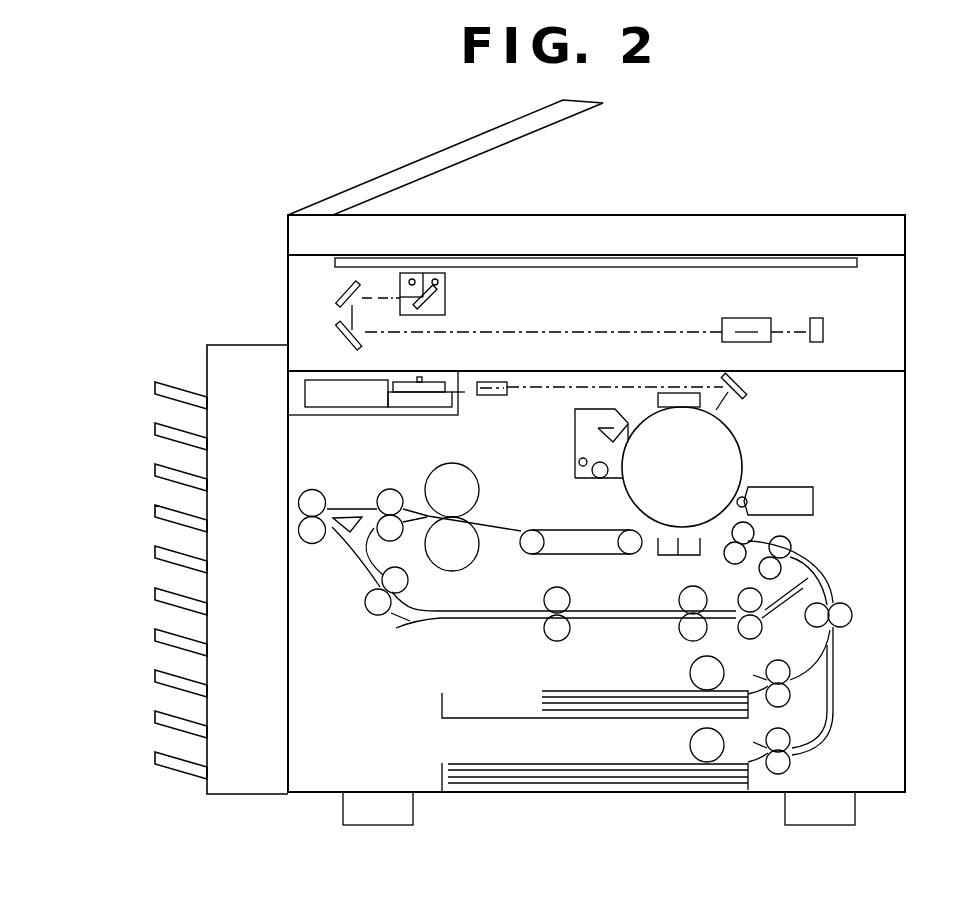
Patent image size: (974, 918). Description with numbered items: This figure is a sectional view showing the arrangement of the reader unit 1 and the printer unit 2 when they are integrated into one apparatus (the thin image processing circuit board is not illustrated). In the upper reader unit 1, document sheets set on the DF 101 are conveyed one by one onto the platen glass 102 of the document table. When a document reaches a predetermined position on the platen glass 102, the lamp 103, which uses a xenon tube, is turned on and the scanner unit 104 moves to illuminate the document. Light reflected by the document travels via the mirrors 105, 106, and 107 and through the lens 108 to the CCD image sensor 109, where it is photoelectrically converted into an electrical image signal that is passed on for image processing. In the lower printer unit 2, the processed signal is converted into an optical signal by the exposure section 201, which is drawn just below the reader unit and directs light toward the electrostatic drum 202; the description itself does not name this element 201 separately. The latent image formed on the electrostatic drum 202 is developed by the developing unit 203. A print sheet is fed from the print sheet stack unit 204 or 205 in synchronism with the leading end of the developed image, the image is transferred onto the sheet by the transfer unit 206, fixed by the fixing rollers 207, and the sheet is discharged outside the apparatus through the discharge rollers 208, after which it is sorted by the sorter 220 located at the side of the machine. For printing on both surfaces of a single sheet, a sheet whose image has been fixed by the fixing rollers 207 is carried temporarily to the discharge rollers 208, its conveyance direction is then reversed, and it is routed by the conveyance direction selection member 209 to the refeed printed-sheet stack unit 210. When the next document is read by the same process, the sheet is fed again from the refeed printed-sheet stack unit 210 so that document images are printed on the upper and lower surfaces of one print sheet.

The reader unit 1 is at (905, 306).
The printer unit 2 is at (905, 452).
The DF 101 is at (403, 177).
The platen glass 102 is at (782, 260).
The lamp 103 is at (440, 281).
The scanner unit 104 is at (445, 298).
The mirror 105 is at (448, 316).
The mirror 106 is at (343, 292).
The mirror 107 is at (343, 333).
The lens 108 is at (745, 318).
The CCD image sensor 109 is at (818, 318).
The laser driver / exposure unit 201 is at (408, 390).
The electrostatic drum 202 is at (737, 438).
The developing unit 203 is at (805, 498).
The print sheet stack unit 204 is at (440, 712).
The print sheet stack unit 205 is at (440, 782).
The transfer unit 206 is at (668, 557).
The fixing rollers 207 is at (467, 478).
The discharge rollers 208 is at (305, 505).
The conveyance direction selection member 209 is at (338, 537).
The refeed printed-sheet stack unit 210 is at (623, 615).
The sorter 220 is at (252, 795).